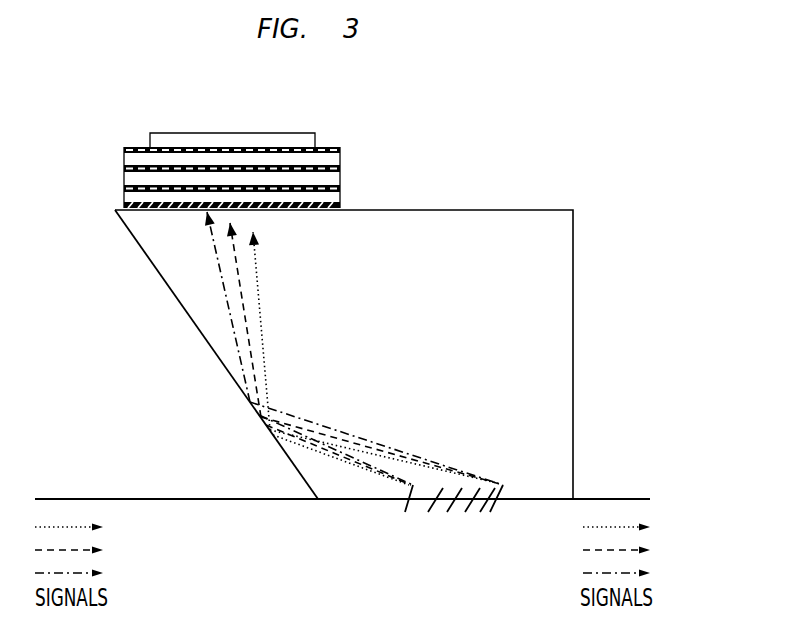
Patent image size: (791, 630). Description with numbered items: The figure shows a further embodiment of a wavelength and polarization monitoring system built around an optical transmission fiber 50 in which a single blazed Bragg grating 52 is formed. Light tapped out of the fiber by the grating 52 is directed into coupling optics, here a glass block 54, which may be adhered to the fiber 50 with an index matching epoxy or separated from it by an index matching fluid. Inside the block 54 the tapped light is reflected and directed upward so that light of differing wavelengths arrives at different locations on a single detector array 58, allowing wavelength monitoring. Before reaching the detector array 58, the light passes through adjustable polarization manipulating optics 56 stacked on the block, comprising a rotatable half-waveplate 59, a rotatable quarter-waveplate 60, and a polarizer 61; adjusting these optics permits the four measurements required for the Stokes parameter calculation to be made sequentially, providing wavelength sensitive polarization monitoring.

The optical transmission fiber 50 is at (287, 500).
The blazed Bragg grating 52 is at (403, 512).
The glass block 54 is at (573, 303).
The polarization manipulating optics 56 is at (234, 169).
The detector array 58 is at (150, 133).
The rotatable half-waveplate 59 is at (124, 189).
The rotatable quarter-waveplate 60 is at (124, 169).
The polarizer 61 is at (124, 150).